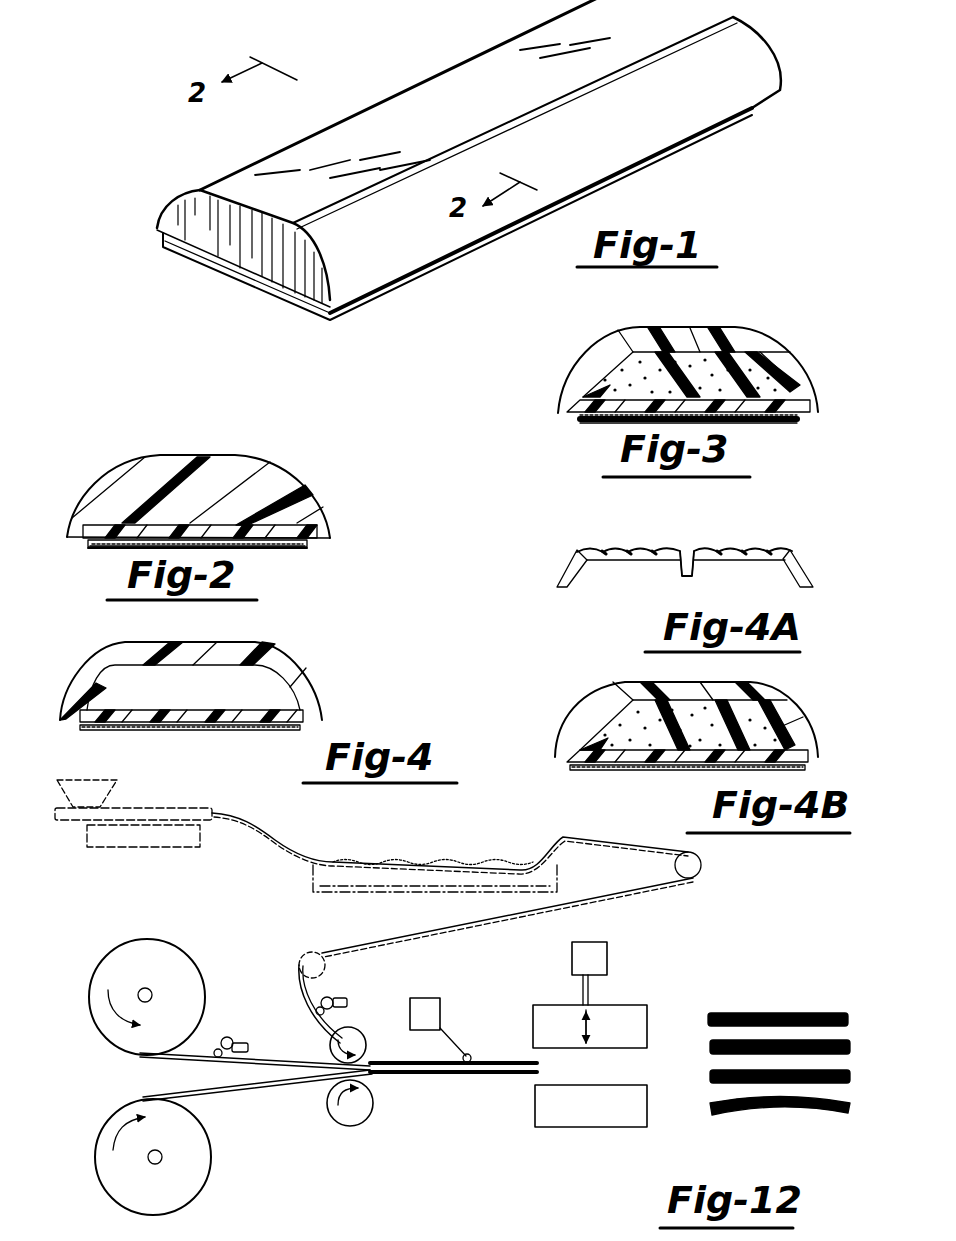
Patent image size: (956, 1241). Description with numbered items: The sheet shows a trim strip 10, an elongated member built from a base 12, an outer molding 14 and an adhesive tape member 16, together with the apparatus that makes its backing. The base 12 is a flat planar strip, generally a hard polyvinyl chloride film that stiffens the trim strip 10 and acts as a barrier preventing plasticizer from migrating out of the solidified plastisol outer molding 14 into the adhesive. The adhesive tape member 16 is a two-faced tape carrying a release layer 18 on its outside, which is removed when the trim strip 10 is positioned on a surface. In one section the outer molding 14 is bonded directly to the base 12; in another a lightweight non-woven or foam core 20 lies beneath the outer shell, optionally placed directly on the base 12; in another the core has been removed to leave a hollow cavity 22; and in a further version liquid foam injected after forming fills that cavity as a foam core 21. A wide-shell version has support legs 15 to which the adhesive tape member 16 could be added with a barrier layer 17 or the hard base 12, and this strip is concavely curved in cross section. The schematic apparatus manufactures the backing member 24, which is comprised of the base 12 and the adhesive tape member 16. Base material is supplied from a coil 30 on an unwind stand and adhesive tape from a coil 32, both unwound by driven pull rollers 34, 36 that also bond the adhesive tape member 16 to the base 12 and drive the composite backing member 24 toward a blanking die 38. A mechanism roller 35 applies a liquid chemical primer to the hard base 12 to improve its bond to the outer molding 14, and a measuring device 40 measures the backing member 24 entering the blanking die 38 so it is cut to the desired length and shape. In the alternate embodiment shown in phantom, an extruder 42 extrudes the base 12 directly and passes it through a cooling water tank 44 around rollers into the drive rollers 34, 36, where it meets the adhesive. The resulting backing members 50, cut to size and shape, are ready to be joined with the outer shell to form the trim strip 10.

In FIG. 1, the trim strip 10 is at (335, 72).
In FIG. 2, the trim strip 10 is at (187, 440).
In FIG. 3, the trim strip 10 is at (583, 328).
In FIG. 4, the trim strip 10 is at (68, 664).
In FIG. 4A, the trim strip 10 is at (670, 541).
In FIG. 4B, the trim strip 10 is at (565, 704).
In FIG. 2, the base 12 is at (320, 534).
In FIG. 3, the base 12 is at (573, 413).
In FIG. 4, the base 12 is at (307, 727).
In FIG. 4B, the base 12 is at (803, 760).
In FIG. 12, the base 12 is at (163, 1058).
In FIG. 1, the outer molding 14 is at (612, 153).
In FIG. 2, the outer molding 14 is at (310, 497).
In FIG. 3, the outer molding 14 is at (670, 340).
In FIG. 4, the outer molding 14 is at (287, 667).
In FIG. 4A, the outer molding 14 is at (773, 547).
In FIG. 4B, the outer molding 14 is at (783, 705).
In FIG. 4A, the support legs 15 is at (690, 567).
In FIG. 1, the adhesive tape member 16 is at (320, 314).
In FIG. 2, the adhesive tape member 16 is at (83, 540).
In FIG. 3, the adhesive tape member 16 is at (800, 413).
In FIG. 4, the adhesive tape member 16 is at (78, 725).
In FIG. 4A, the adhesive tape member 16 is at (563, 587).
In FIG. 4B, the adhesive tape member 16 is at (570, 762).
In FIG. 12, the adhesive tape member 16 is at (260, 1091).
In FIG. 4A, the barrier layer 17 is at (803, 577).
In FIG. 1, the release layer 18 is at (283, 303).
In FIG. 2, the release layer 18 is at (97, 551).
In FIG. 3, the release layer 18 is at (777, 423).
In FIG. 4, the release layer 18 is at (153, 731).
In FIG. 4B, the release layer 18 is at (650, 767).
In FIG. 3, the core 20 is at (767, 362).
In FIG. 4B, the foam core 21 is at (627, 728).
In FIG. 4, the hollow cavity 22 is at (184, 687).
In FIG. 12, the backing member 24 is at (447, 1076).
In FIG. 12, the coil 30 is at (86, 998).
In FIG. 12, the coil 32 is at (98, 1180).
In FIG. 12, the driven pull roller 34 is at (352, 1128).
In FIG. 12, the mechanism roller 35 is at (230, 1030).
In FIG. 12, the driven pull roller 36 is at (356, 1028).
In FIG. 12, the blanking die 38 is at (530, 1128).
In FIG. 12, the measuring device 40 is at (443, 989).
In FIG. 12, the extruder 42 is at (93, 846).
In FIG. 12, the cooling water tank 44 is at (317, 890).
In FIG. 2, the backing members 50 is at (308, 550).
In FIG. 3, the backing members 50 is at (612, 424).
In FIG. 12, the backing members 50 is at (730, 1006).